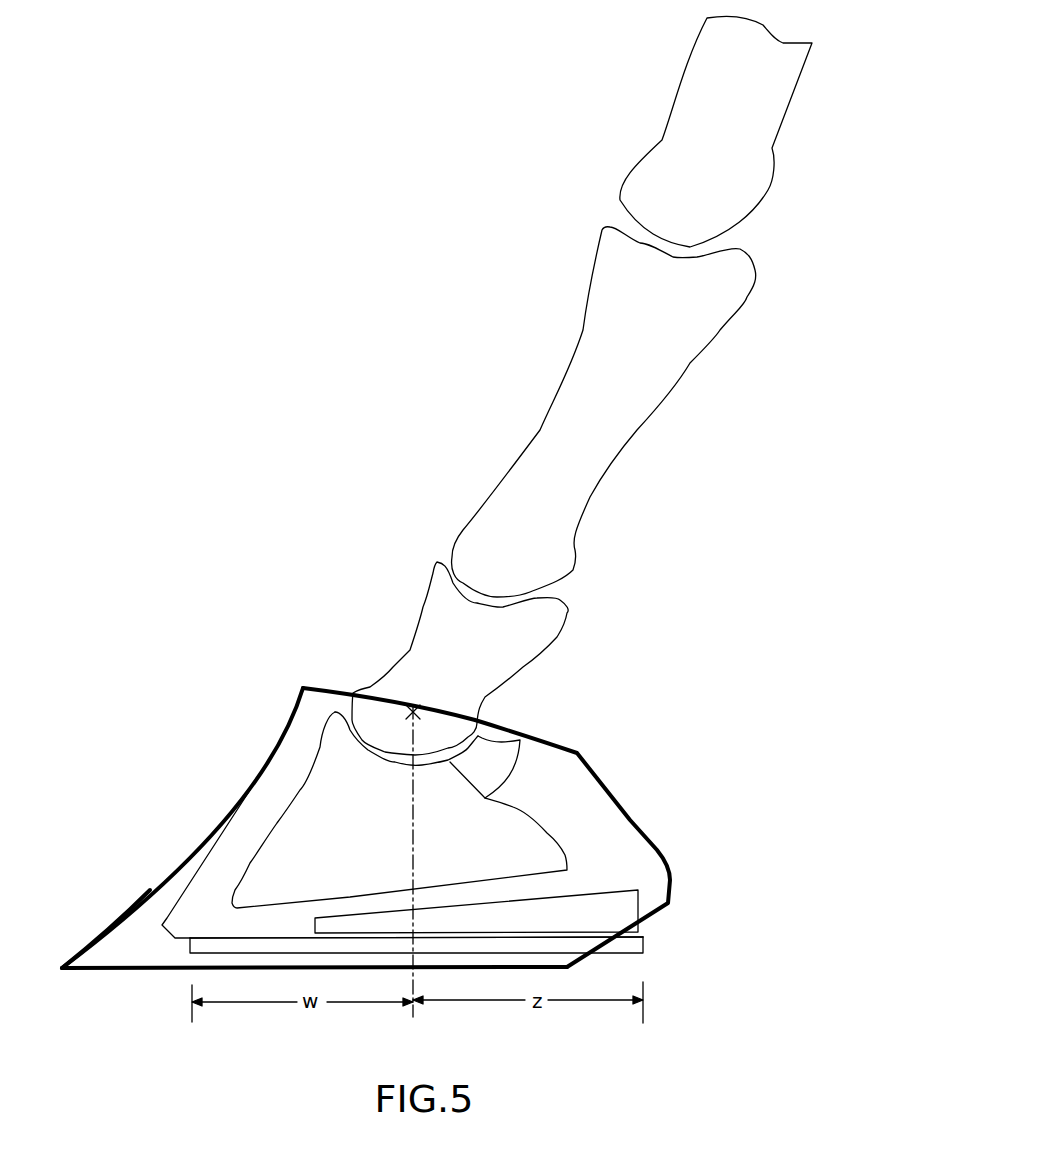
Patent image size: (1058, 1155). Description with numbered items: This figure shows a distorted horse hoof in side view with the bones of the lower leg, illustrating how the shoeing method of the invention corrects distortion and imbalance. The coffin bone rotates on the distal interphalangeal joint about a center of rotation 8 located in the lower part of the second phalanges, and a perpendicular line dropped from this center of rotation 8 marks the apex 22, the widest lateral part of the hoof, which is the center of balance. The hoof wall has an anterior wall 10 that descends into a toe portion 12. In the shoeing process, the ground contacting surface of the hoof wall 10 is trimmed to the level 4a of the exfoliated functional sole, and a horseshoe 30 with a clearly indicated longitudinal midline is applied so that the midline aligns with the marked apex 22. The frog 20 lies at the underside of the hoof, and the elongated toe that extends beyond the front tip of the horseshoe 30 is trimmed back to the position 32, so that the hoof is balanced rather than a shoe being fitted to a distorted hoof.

The center of rotation 8 is at (413, 708).
The anterior wall 10 is at (237, 806).
The toe portion 12 is at (95, 940).
The frog 20 is at (625, 917).
The apex of the hoof wall curve 22 is at (417, 988).
The horseshoe 30 is at (342, 950).
The trimmed toe position 32 is at (182, 892).
The level of the exfoliated functional sole 4a is at (285, 938).